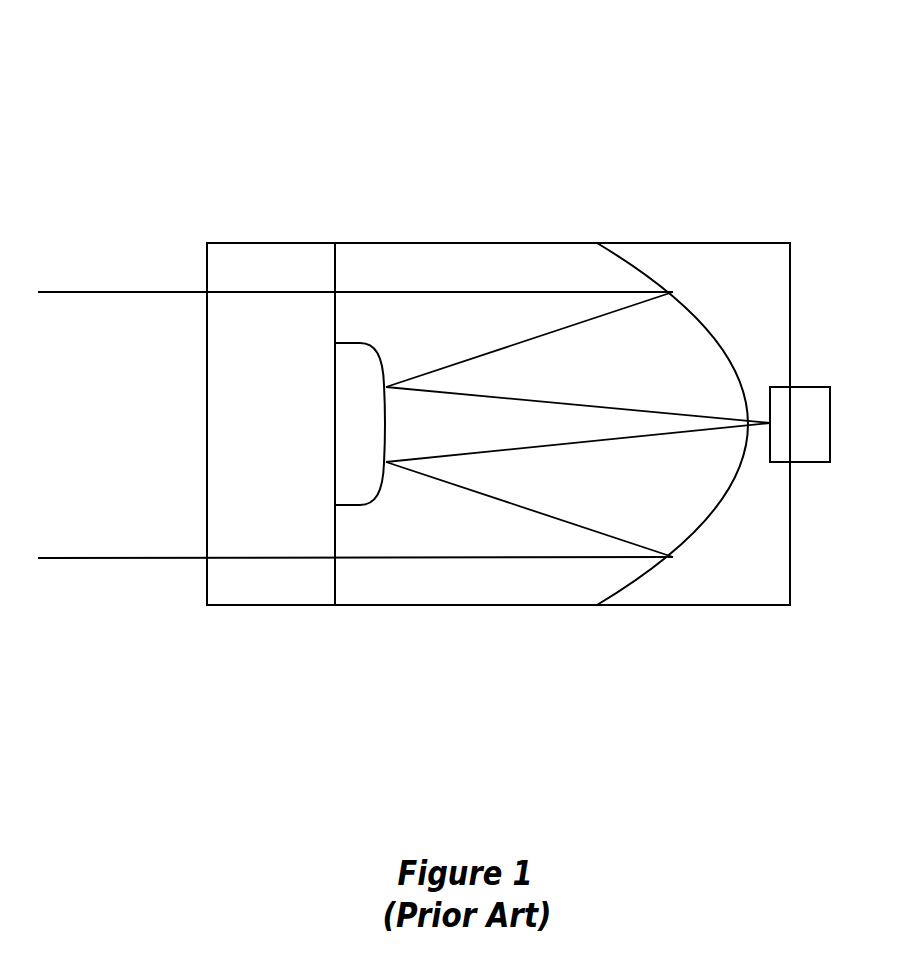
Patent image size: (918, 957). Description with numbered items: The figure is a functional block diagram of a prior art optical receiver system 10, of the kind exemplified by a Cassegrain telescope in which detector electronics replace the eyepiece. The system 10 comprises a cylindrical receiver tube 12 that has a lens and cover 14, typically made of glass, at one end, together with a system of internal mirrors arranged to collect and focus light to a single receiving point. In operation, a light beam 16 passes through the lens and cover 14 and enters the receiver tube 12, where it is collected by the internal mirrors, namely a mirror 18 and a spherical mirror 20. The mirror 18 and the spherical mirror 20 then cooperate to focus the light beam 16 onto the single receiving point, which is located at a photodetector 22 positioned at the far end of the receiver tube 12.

The receiver system 10 is at (738, 118).
The receiver tube 12 is at (495, 605).
The lens and cover 14 is at (222, 498).
The light beam 16 is at (160, 558).
The mirror 18 is at (360, 342).
The spherical mirror 20 is at (643, 267).
The photodetector 22 is at (810, 387).